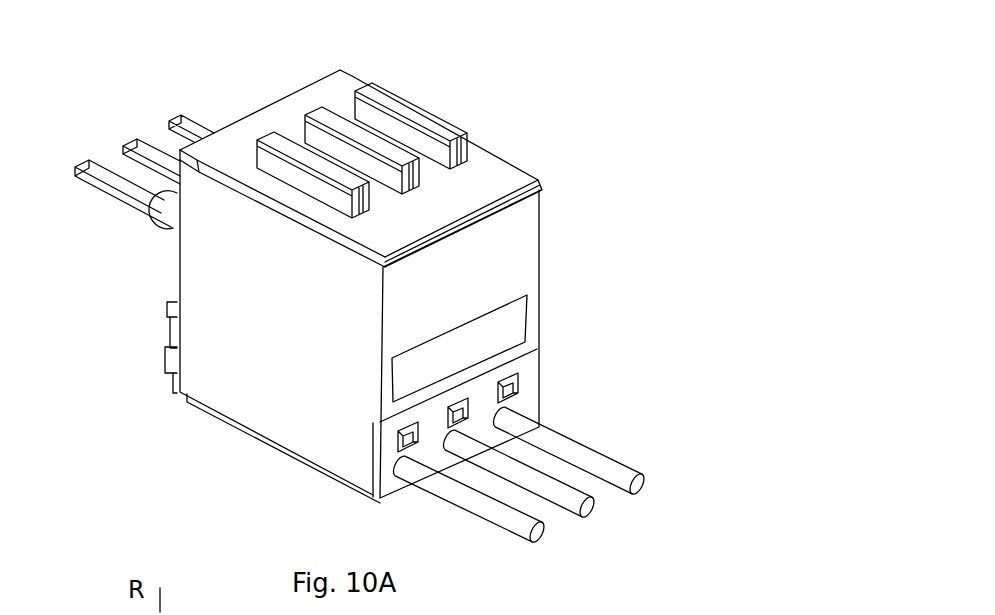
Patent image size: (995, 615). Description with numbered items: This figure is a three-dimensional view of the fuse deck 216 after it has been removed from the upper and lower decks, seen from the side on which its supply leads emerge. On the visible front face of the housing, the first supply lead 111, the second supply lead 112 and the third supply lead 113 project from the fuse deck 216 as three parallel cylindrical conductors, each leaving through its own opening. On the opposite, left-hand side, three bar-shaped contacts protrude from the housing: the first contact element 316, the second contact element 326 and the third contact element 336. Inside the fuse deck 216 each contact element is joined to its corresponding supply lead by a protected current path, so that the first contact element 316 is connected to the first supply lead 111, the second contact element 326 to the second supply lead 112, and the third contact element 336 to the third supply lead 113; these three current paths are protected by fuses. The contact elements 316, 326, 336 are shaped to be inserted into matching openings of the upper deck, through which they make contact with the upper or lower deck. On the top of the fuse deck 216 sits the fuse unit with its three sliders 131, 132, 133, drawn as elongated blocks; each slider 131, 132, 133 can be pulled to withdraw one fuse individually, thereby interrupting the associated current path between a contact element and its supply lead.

The fuse deck 216 is at (577, 73).
The third contact element 336 is at (175, 118).
The second contact element 326 is at (137, 142).
The first contact element 316 is at (90, 167).
The slider 133 is at (513, 179).
The slider 132 is at (470, 211).
The slider 131 is at (410, 232).
The first supply lead 111 is at (538, 540).
The second supply lead 112 is at (589, 514).
The third supply lead 113 is at (640, 490).